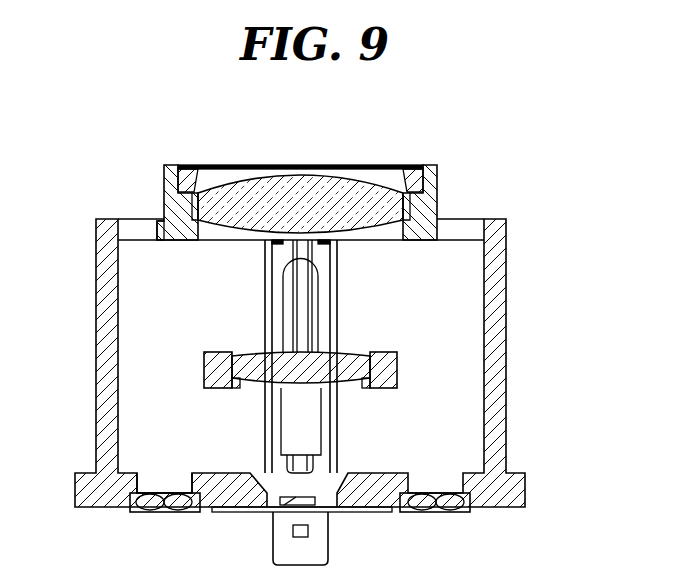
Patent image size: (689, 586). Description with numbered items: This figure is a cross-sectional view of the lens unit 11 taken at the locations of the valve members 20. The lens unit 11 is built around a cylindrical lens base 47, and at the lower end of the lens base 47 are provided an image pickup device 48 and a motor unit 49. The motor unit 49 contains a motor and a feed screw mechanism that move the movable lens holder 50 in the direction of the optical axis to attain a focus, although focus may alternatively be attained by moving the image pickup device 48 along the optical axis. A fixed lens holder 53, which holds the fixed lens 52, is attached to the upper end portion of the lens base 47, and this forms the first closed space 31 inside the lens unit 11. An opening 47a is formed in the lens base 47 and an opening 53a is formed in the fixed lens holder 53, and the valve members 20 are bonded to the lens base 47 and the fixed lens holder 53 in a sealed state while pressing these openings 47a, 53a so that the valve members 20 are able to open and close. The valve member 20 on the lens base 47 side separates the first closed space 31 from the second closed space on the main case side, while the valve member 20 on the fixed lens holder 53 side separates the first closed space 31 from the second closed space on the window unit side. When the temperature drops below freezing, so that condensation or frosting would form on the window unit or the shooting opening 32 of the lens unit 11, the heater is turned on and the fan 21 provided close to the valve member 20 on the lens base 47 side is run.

The lens unit 11 is at (323, 370).
The valve member 20 is at (292, 370).
The fan 21 is at (178, 506).
The first closed space 31 is at (435, 412).
The shooting opening 32 is at (208, 169).
The lens base 47 is at (276, 392).
The opening 47a is at (148, 480).
The image pickup device 48 is at (253, 513).
The motor unit 49 is at (330, 540).
The movable lens holder 50 is at (398, 372).
The fixed lens 52 is at (344, 176).
The fixed lens holder 53 is at (308, 199).
The opening 53a is at (152, 228).